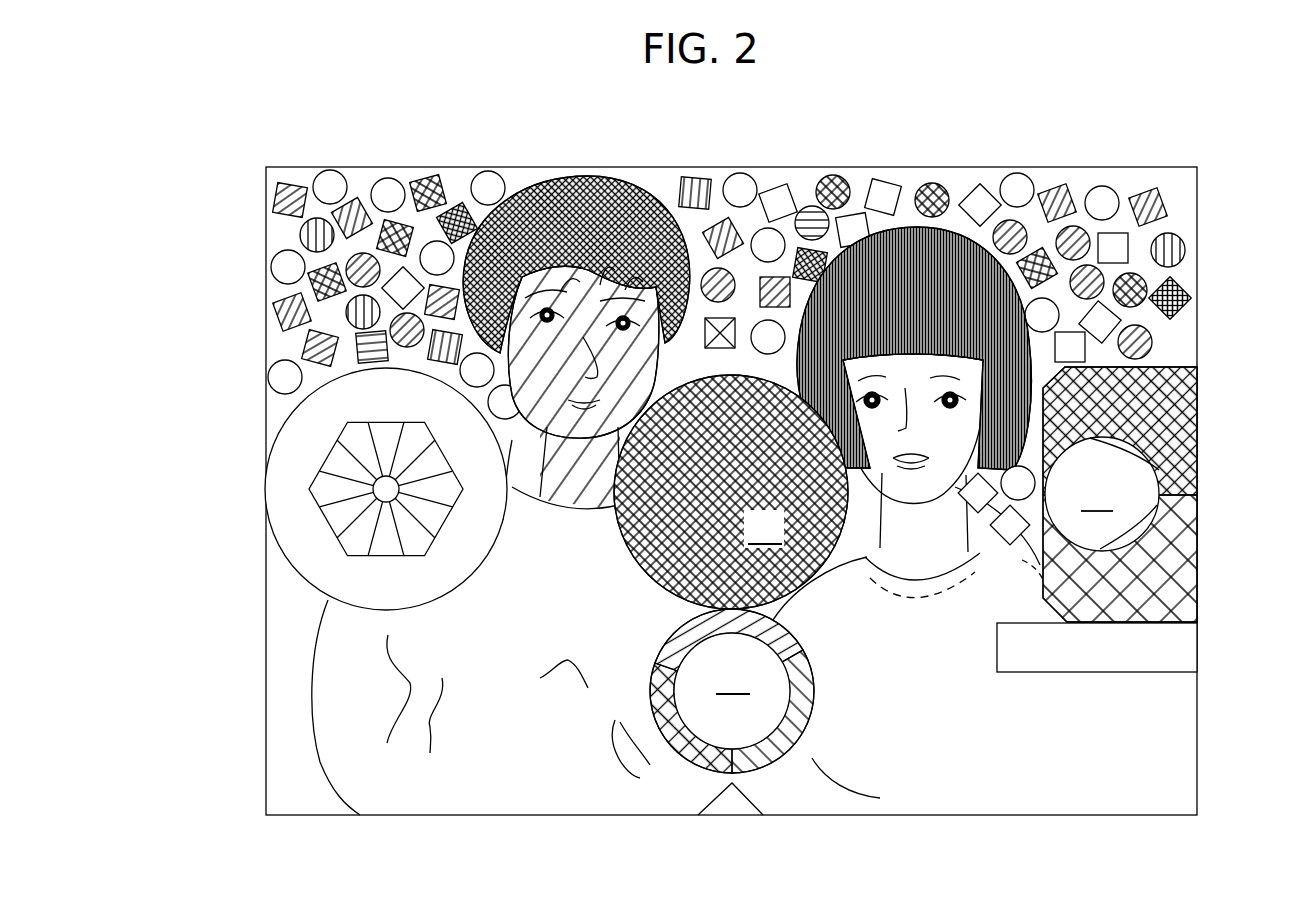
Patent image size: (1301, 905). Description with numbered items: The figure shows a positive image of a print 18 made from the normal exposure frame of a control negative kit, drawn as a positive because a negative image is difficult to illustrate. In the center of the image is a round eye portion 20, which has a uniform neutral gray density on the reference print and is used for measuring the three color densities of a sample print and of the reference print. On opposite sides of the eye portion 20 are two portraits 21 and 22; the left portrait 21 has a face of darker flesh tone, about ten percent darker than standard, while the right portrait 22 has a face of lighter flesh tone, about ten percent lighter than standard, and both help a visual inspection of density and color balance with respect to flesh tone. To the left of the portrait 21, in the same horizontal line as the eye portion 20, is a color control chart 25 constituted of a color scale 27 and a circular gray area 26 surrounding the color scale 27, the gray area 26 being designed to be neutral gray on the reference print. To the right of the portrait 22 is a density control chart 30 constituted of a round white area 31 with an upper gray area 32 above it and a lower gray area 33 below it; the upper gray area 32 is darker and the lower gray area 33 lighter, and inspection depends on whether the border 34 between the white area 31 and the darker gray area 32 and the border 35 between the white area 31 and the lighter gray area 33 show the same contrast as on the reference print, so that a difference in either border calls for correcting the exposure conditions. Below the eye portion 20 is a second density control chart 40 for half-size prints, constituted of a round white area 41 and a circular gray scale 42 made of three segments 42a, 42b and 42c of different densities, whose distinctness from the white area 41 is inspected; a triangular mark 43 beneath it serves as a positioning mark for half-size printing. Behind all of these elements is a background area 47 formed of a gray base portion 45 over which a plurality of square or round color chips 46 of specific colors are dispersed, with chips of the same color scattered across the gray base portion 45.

The print 18 is at (775, 164).
The eye portion 20 is at (731, 492).
The portrait 21 is at (619, 177).
The portrait 22 is at (947, 230).
The color control chart 25 is at (331, 489).
The gray area 26 is at (284, 461).
The color scale 27 is at (305, 495).
The density control chart 30 is at (1147, 487).
The white area 31 is at (1102, 494).
The upper gray area 32 is at (1185, 422).
The lower gray area 33 is at (1185, 575).
The border 34 is at (1162, 468).
The border 35 is at (1152, 530).
The second density control chart 40 is at (733, 727).
The white area 41 is at (732, 691).
The circular gray scale 42 is at (733, 677).
The gray scale segment 42a is at (680, 630).
The gray scale segment 42b is at (663, 675).
The gray scale segment 42c is at (803, 670).
The triangular mark 43 is at (730, 805).
The gray base portion 45 is at (292, 188).
The color chips 46 is at (352, 200).
The background area 47 is at (730, 245).